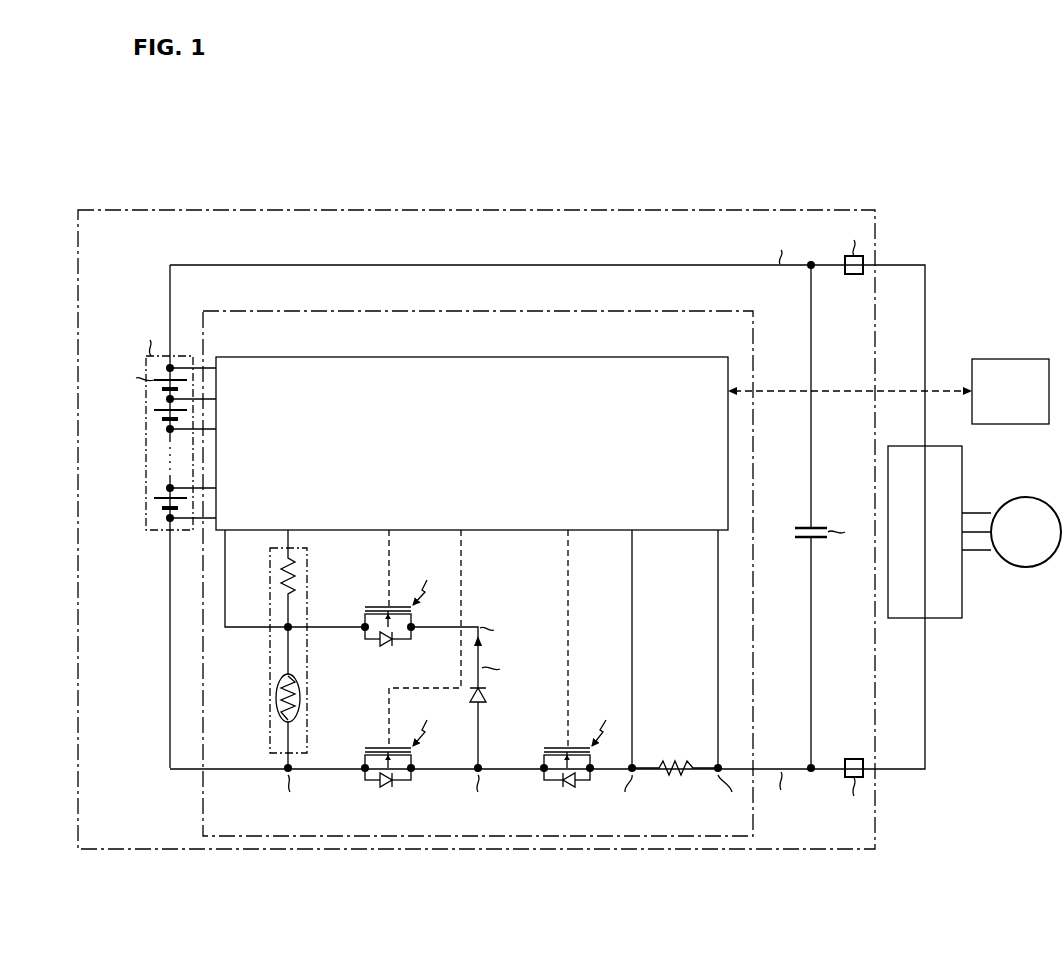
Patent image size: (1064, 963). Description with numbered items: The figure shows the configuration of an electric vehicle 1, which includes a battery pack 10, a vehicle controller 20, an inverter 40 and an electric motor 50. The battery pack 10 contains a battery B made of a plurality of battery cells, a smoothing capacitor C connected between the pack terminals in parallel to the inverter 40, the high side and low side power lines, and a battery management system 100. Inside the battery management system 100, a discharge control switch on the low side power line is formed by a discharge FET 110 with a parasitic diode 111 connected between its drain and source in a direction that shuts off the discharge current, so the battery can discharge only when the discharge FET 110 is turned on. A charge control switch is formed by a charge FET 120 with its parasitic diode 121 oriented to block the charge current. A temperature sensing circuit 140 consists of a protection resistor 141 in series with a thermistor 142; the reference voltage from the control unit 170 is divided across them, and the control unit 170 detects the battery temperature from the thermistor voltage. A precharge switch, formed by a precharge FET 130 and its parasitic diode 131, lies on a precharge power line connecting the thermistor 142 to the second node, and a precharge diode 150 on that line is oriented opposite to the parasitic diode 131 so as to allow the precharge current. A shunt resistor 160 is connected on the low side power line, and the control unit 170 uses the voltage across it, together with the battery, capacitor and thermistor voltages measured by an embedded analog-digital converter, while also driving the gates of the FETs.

The electric vehicle 1 is at (192, 158).
The battery pack 10 is at (735, 210).
The vehicle controller 20 is at (1009, 359).
The inverter 40 is at (946, 446).
The electric motor 50 is at (1024, 497).
The battery management system 100 is at (601, 311).
The discharge FET 110 is at (365, 755).
The parasitic diode 111 is at (392, 788).
The charge FET 120 is at (544, 755).
The parasitic diode 121 is at (568, 788).
The precharge FET 130 is at (365, 614).
The parasitic diode 131 is at (392, 647).
The temperature sensing circuit 140 is at (307, 557).
The protection resistor 141 is at (282, 568).
The thermistor 142 is at (300, 698).
The precharge diode 150 is at (488, 697).
The shunt resistor 160 is at (671, 760).
The control unit 170 is at (661, 357).